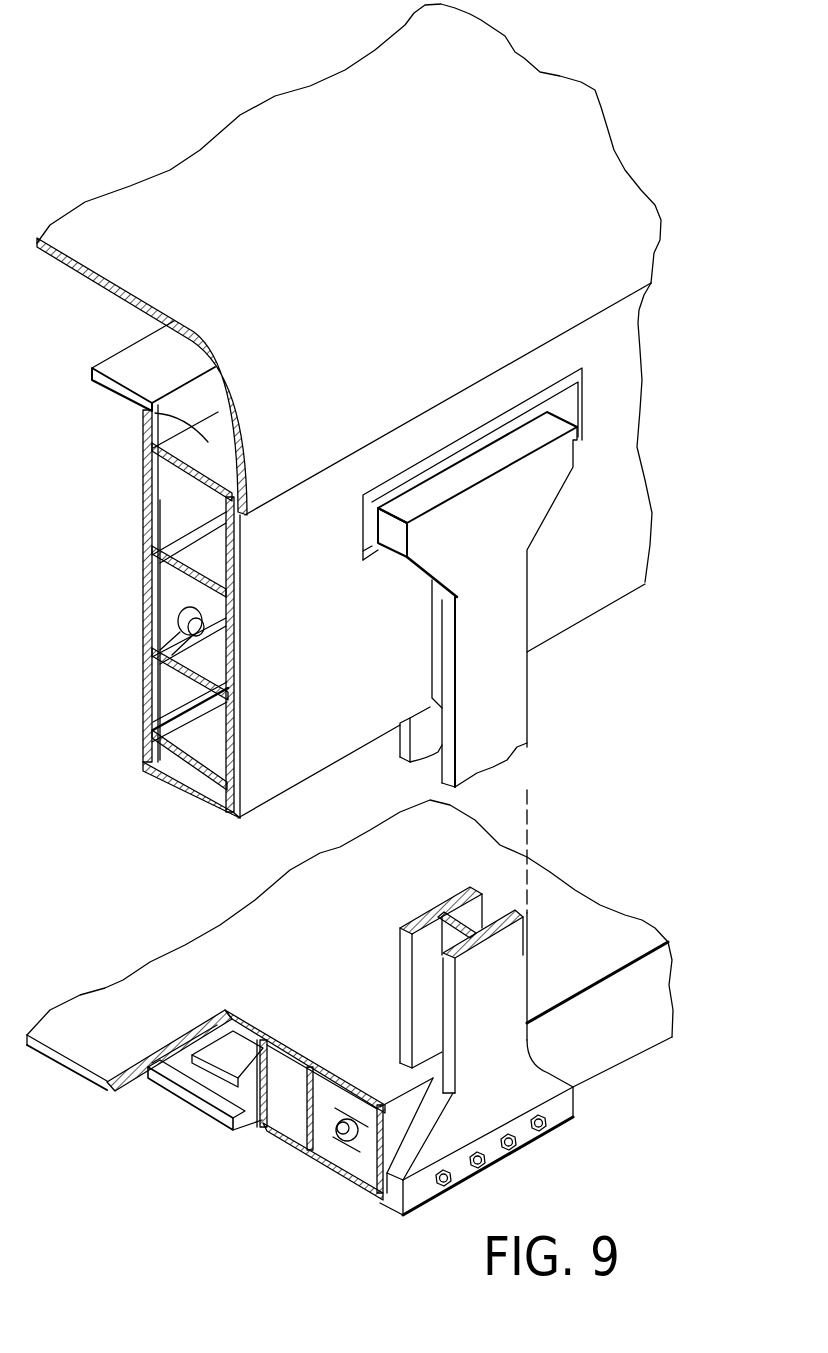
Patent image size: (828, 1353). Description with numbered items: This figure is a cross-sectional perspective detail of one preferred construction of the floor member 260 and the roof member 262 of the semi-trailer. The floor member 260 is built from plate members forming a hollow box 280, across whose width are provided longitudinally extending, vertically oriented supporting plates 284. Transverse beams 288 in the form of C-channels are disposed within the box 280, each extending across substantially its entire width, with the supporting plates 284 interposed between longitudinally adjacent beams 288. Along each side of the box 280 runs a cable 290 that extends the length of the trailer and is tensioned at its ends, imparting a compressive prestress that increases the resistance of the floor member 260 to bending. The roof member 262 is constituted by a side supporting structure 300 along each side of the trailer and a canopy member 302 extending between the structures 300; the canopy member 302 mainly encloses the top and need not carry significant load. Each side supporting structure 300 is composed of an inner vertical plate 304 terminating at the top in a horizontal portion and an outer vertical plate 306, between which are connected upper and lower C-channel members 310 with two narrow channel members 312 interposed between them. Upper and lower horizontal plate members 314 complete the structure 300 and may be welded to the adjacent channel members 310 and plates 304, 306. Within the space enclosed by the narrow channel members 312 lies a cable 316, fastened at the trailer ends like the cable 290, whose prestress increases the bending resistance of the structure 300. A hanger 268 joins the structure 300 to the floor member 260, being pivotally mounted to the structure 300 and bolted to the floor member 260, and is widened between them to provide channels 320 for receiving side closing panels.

The floor member 260 is at (357, 1001).
The roof member 262 is at (381, 414).
The hanger 268 is at (495, 697).
The hollow box 280 is at (246, 1102).
The supporting plates 284 is at (300, 1107).
The transverse beams 288 is at (181, 1097).
The cable 290 is at (333, 1108).
The side supporting structure 300 is at (482, 550).
The canopy member 302 is at (514, 87).
The inner vertical plate 304 is at (145, 565).
The outer vertical plate 306 is at (386, 667).
The C-channel members 310 is at (170, 503).
The narrow channel members 312 is at (178, 588).
The horizontal plate members 314 is at (145, 410).
The cable 316 is at (233, 645).
The channels 320 is at (460, 893).